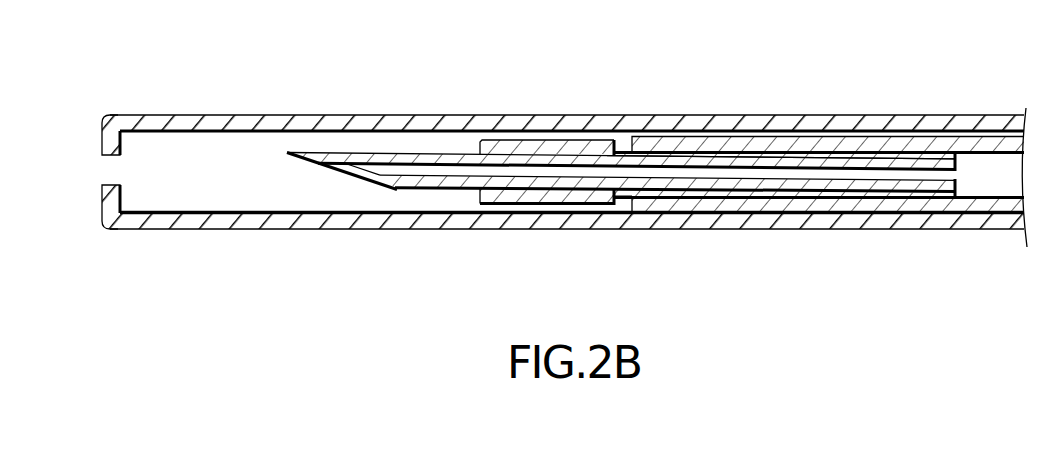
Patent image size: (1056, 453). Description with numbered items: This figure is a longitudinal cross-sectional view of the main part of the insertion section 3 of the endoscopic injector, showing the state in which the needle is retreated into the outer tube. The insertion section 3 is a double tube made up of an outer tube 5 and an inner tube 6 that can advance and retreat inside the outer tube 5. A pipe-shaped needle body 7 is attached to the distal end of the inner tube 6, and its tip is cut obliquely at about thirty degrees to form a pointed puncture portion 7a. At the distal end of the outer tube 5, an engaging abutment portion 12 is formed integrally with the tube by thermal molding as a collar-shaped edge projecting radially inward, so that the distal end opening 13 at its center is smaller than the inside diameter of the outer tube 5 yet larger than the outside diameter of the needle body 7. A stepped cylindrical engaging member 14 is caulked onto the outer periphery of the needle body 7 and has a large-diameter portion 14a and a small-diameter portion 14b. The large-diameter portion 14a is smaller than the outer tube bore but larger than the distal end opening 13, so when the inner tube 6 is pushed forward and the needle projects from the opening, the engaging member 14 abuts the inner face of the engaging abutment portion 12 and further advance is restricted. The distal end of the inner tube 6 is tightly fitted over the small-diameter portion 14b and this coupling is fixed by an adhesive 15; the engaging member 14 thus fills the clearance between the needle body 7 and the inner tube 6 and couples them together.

The insertion section 3 is at (614, 90).
The outer tube 5 is at (880, 137).
The inner tube 6 is at (961, 205).
The needle body 7 is at (428, 156).
The puncture portion 7a is at (290, 156).
The engaging abutment portion 12 is at (108, 133).
The distal end opening 13 is at (108, 170).
The engaging member 14 is at (570, 206).
The large-diameter portion 14a is at (543, 141).
The small-diameter portion 14b is at (660, 153).
The adhesive 15 is at (720, 156).